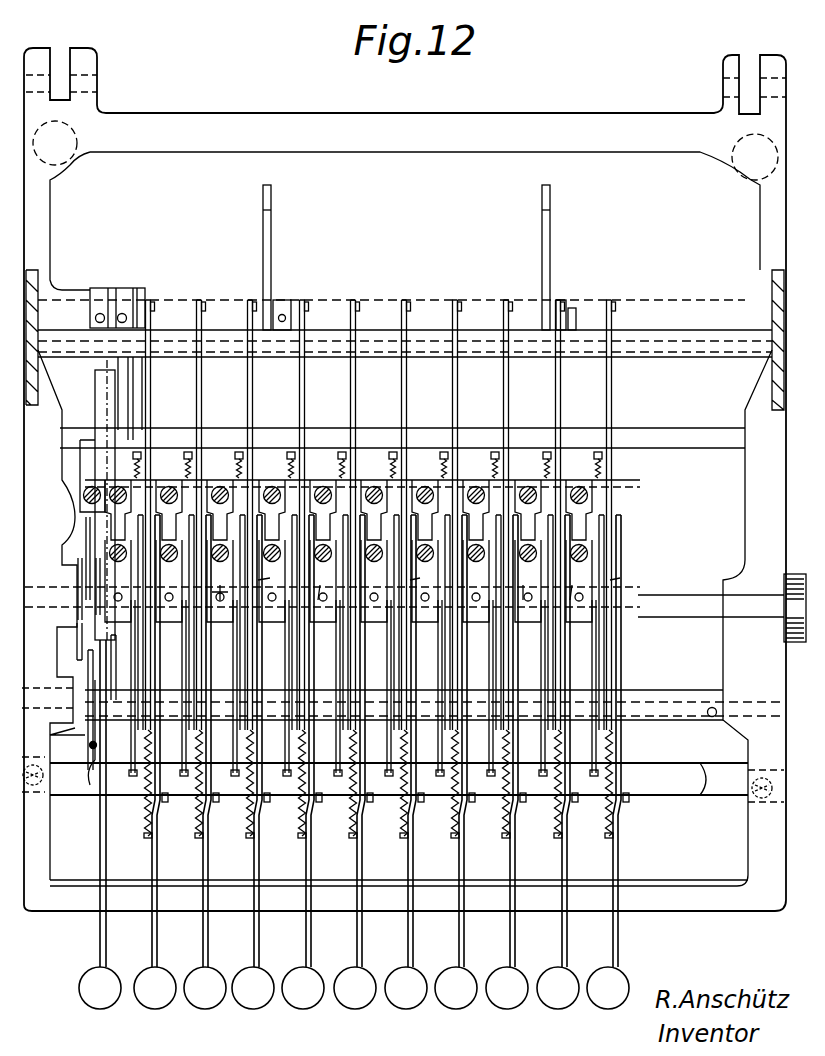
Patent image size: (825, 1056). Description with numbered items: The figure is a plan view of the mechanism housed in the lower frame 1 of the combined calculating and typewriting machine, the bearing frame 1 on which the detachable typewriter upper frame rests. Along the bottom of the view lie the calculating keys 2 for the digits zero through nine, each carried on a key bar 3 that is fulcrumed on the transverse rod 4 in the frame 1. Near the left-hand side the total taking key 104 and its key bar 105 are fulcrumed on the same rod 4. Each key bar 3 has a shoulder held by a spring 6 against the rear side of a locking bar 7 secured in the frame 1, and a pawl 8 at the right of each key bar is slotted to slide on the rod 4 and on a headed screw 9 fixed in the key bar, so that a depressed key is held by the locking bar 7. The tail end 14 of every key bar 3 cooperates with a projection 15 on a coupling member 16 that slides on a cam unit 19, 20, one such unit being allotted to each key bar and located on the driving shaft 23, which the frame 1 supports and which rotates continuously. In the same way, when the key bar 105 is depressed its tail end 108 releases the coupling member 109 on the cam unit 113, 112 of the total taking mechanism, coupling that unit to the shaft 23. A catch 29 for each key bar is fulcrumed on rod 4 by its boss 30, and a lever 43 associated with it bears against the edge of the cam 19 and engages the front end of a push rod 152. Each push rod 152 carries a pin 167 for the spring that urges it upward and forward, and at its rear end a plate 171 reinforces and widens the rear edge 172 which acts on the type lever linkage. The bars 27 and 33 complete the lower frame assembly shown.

The lower frame 1 is at (711, 918).
The calculating keys 2 is at (622, 1022).
The key bars 3 is at (508, 935).
The transverse rod 4 is at (705, 722).
The spring 6 is at (458, 820).
The locking bar 7 is at (677, 800).
The pawl 8 is at (626, 802).
The headed screw 9 is at (615, 738).
The tail end 14 is at (645, 640).
The projection 15 is at (650, 625).
The coupling member 16 is at (444, 577).
The cam 19 is at (250, 540).
The cam unit part 20 is at (555, 545).
The driving shaft 23 is at (675, 600).
The lever 27 is at (600, 652).
The catch 29 is at (596, 752).
The boss 30 is at (55, 727).
The spring plate 33 is at (655, 768).
The link rods 43 is at (400, 690).
The total taking key 104 is at (110, 1005).
The total taking key bar 105 is at (100, 935).
The tail end 108 is at (95, 628).
The coupling member 109 is at (96, 575).
The cam unit part 112 is at (94, 550).
The cam unit part 113 is at (95, 540).
The push rod 152 is at (612, 425).
The pin 167 is at (395, 450).
The plate 171 is at (610, 302).
The rear edge 172 is at (200, 300).